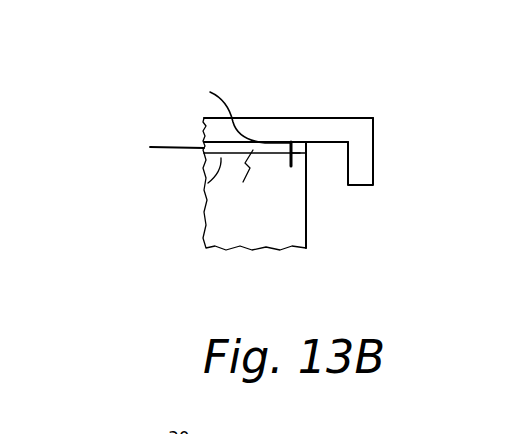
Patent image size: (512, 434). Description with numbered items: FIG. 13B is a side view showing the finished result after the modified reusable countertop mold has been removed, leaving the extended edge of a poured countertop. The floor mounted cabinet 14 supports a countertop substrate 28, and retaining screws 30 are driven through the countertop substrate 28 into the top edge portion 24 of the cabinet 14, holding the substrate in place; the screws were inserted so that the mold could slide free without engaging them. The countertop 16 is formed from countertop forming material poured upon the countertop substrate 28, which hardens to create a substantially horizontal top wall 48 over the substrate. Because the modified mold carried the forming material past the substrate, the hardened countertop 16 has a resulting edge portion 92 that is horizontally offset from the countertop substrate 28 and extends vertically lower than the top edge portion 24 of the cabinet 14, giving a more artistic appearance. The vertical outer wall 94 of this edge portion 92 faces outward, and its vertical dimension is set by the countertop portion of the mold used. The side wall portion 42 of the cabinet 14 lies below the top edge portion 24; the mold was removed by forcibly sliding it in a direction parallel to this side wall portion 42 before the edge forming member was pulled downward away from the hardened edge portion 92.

The floor mounted cabinet 14 is at (205, 185).
The countertop 16 is at (283, 130).
The top edge portion 24 is at (290, 153).
The countertop substrate 28 is at (182, 172).
The retaining screws 30 is at (238, 109).
The side wall portion 42 is at (306, 215).
The horizontal top wall 48 is at (244, 118).
The edge portion 92 is at (367, 137).
The vertical outer wall 94 is at (373, 164).